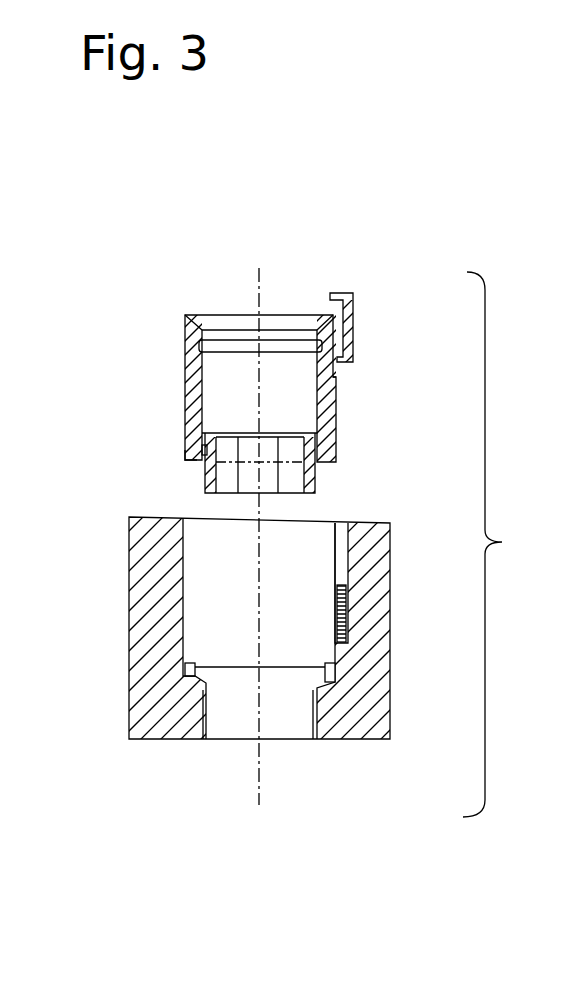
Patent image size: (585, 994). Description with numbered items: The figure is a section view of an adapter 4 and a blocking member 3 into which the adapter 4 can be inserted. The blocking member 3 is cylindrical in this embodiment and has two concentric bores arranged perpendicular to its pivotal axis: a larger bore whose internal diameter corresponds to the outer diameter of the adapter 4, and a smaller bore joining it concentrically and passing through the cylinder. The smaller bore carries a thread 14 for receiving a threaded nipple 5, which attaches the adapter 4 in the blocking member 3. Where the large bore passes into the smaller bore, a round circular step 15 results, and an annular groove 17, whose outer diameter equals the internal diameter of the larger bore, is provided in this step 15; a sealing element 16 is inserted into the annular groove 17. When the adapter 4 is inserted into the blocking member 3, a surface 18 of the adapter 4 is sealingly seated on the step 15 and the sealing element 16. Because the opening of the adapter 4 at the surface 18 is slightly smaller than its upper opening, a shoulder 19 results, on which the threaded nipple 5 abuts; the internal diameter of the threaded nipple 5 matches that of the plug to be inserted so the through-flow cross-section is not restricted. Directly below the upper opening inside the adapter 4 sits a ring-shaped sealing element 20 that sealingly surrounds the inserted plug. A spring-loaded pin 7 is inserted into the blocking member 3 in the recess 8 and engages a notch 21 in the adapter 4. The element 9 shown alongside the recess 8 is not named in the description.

The blocking member 3 is at (380, 645).
The adapter 4 is at (146, 287).
The threaded nipple 5 is at (320, 483).
The pin 7 is at (353, 340).
The recess 8 is at (340, 525).
The spring element 9 is at (348, 603).
The thread 14 is at (338, 740).
The step 15 is at (203, 660).
The sealing element 16 is at (185, 662).
The annular groove 17 is at (330, 683).
The surface 18 is at (200, 463).
The shoulder 19 is at (187, 453).
The sealing element 20 is at (193, 335).
The notch 21 is at (337, 377).